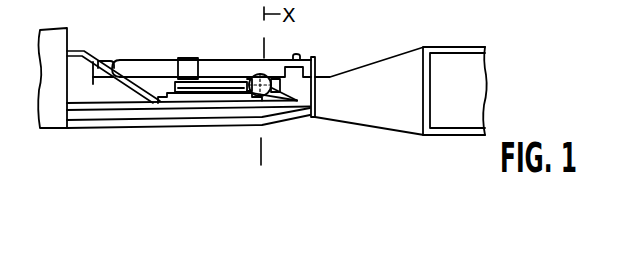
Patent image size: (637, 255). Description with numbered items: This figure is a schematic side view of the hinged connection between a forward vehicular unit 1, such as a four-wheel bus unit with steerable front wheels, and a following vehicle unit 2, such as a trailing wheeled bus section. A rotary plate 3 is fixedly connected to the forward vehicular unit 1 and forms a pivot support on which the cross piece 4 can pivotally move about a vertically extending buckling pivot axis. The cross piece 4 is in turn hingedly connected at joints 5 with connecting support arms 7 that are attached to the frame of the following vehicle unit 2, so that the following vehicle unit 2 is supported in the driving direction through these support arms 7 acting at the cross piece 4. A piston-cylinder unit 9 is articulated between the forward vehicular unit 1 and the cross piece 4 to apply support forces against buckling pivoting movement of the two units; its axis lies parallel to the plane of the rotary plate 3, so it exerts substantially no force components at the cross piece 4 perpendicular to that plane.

The forward vehicular unit 1 is at (55, 118).
The following vehicle unit 2 is at (452, 115).
The rotary plate 3 is at (219, 96).
The cross piece 4 is at (212, 77).
The joints 5 is at (258, 74).
The connecting support arms 7 is at (377, 78).
The piston-cylinder unit 9 is at (147, 59).